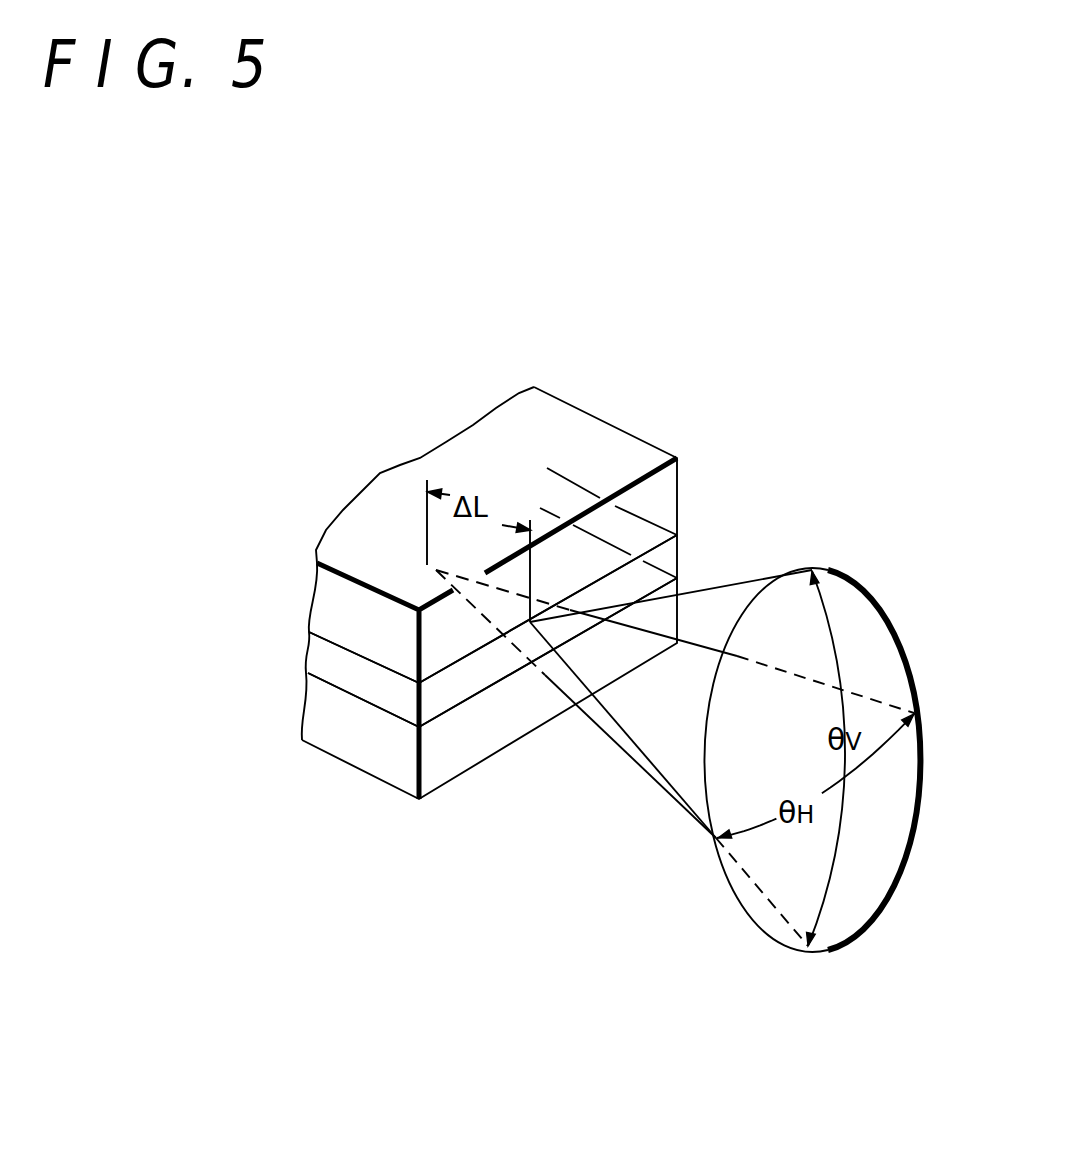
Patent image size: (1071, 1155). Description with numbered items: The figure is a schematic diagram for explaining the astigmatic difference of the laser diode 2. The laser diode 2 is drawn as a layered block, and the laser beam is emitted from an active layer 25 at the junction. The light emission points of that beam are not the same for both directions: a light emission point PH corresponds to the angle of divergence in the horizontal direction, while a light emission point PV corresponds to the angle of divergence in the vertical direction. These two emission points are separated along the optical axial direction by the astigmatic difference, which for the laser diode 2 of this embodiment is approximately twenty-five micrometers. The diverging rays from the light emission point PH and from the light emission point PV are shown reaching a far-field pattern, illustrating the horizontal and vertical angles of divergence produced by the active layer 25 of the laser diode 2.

The laser diode 2 is at (633, 446).
The active layer 25 is at (667, 556).
The light emission point PH is at (436, 569).
The light emission point PV is at (530, 622).